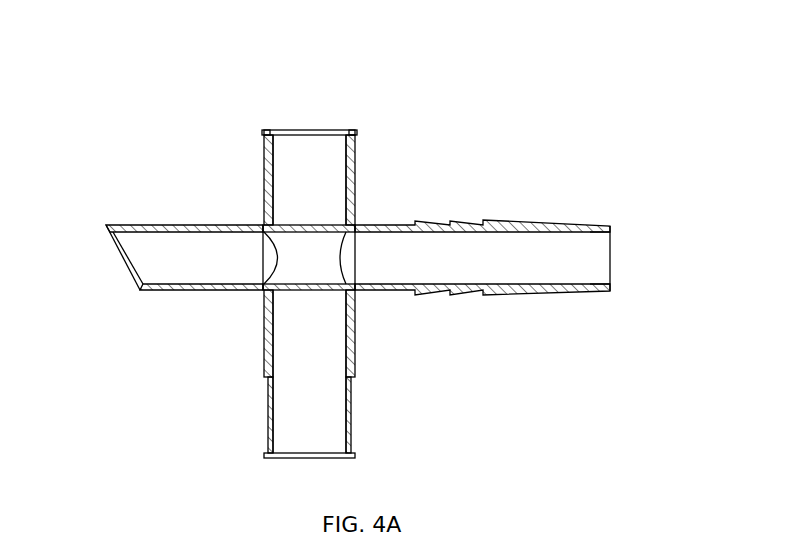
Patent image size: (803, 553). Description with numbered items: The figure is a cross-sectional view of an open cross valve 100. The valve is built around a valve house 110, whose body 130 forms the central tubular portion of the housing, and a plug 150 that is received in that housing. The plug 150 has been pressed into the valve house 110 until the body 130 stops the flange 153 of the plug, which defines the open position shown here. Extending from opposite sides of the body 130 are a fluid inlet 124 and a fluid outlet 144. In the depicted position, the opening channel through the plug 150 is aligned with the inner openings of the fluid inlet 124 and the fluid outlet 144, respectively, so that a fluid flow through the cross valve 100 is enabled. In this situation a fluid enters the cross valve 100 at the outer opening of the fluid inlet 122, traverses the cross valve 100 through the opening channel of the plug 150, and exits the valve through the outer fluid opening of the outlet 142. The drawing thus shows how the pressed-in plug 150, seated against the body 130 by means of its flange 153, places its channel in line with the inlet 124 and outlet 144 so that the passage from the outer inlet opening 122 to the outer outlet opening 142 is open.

The cross valve 100 is at (88, 114).
The valve house 110 is at (495, 222).
The outer opening of the fluid inlet 122 is at (612, 258).
The fluid inlet 124 is at (357, 260).
The body 130 is at (352, 176).
The outer fluid opening of the outlet 142 is at (122, 258).
The fluid outlet 144 is at (262, 257).
The plug 150 is at (322, 152).
The flange 153 is at (268, 128).